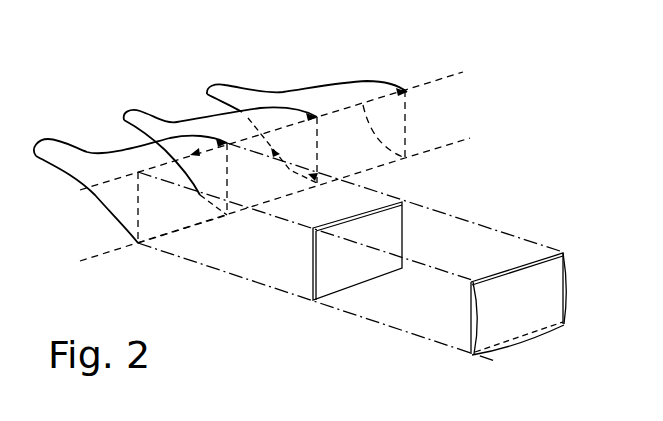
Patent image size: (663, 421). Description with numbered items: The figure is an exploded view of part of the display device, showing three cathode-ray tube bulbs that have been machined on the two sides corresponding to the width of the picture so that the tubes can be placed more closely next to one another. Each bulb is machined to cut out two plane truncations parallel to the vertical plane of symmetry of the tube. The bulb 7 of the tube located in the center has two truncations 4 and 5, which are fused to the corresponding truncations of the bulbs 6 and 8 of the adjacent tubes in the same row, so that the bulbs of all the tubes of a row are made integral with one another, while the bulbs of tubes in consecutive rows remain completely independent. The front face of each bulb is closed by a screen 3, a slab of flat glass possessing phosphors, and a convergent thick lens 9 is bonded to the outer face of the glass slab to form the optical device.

The screen 3 is at (313, 278).
The truncation 4 is at (198, 194).
The truncation 5 is at (287, 162).
The bulb 6 is at (106, 150).
The bulb 7 is at (203, 121).
The bulb 8 is at (332, 97).
The convergent thick lens 9 is at (472, 333).